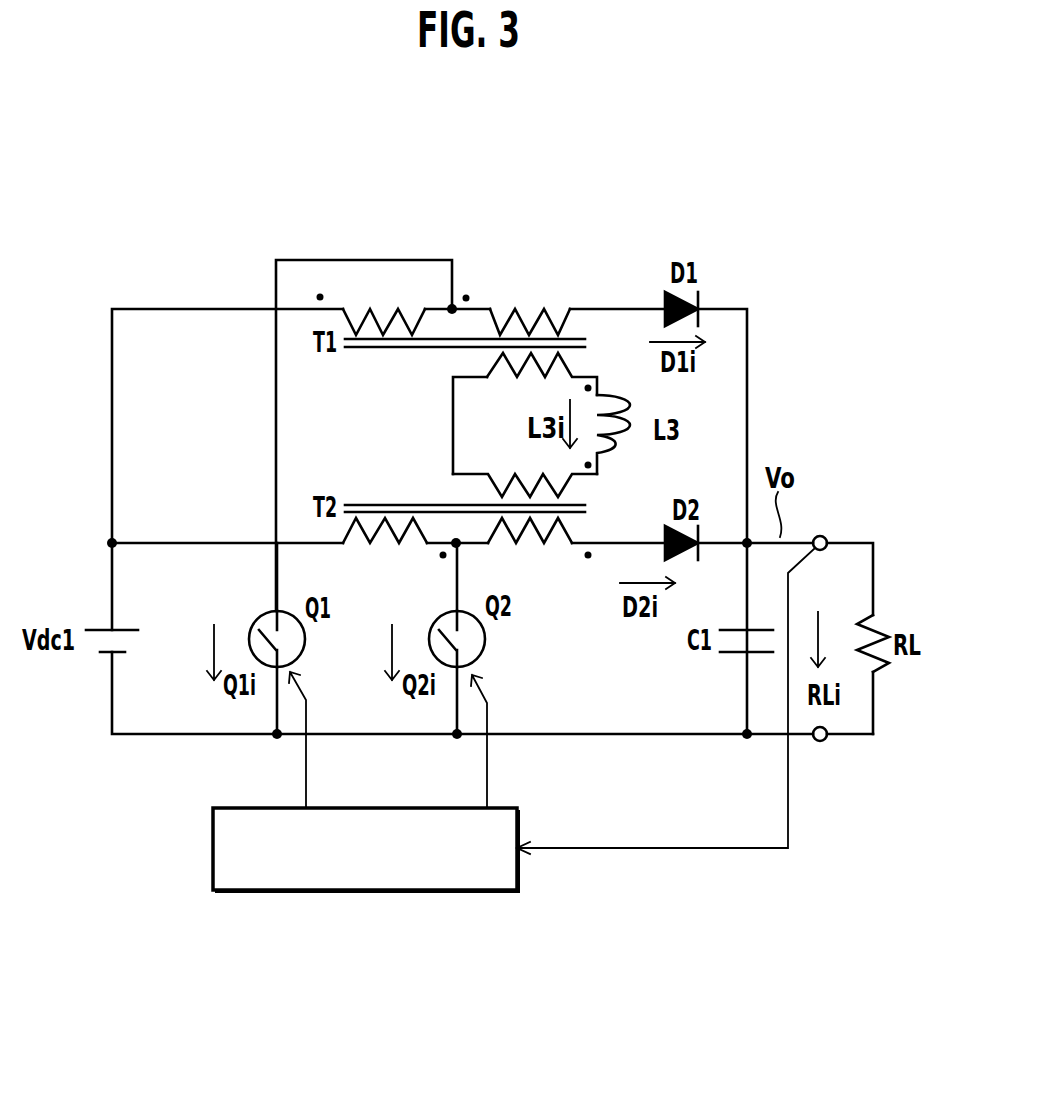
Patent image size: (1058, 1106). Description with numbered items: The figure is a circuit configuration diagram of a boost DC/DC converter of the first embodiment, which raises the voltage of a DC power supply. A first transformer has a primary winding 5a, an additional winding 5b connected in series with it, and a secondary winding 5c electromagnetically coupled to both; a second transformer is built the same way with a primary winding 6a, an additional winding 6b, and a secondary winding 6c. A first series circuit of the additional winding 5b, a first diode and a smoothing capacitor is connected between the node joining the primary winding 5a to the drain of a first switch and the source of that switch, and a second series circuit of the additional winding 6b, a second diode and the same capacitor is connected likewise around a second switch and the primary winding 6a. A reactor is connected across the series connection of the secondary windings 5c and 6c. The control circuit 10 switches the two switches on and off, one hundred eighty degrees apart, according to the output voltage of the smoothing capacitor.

The primary winding 5a is at (385, 270).
The additional winding 5b is at (531, 270).
The secondary winding 5c is at (500, 372).
The primary winding 6a is at (357, 548).
The additional winding 6b is at (565, 548).
The secondary winding 6c is at (553, 466).
The control circuit 10 is at (518, 863).